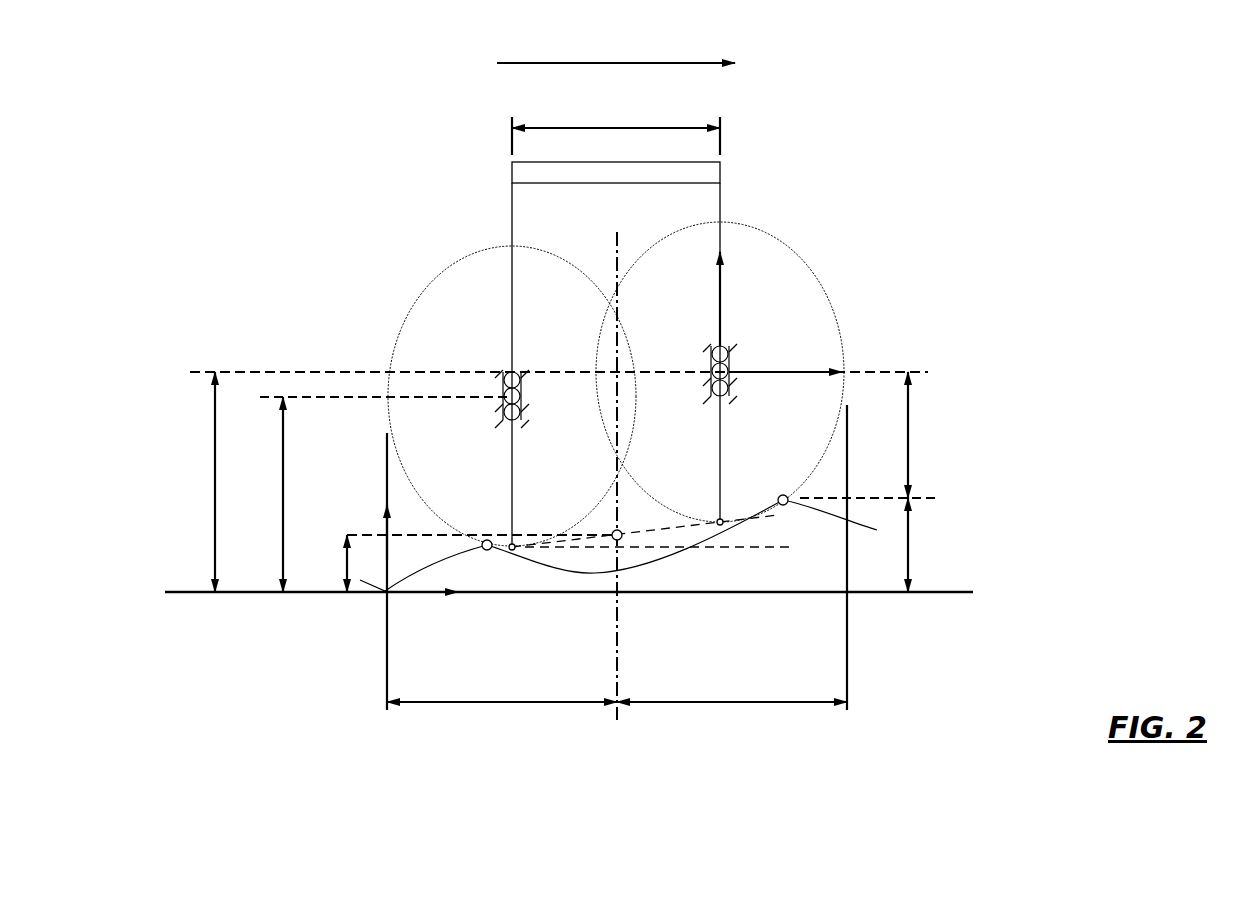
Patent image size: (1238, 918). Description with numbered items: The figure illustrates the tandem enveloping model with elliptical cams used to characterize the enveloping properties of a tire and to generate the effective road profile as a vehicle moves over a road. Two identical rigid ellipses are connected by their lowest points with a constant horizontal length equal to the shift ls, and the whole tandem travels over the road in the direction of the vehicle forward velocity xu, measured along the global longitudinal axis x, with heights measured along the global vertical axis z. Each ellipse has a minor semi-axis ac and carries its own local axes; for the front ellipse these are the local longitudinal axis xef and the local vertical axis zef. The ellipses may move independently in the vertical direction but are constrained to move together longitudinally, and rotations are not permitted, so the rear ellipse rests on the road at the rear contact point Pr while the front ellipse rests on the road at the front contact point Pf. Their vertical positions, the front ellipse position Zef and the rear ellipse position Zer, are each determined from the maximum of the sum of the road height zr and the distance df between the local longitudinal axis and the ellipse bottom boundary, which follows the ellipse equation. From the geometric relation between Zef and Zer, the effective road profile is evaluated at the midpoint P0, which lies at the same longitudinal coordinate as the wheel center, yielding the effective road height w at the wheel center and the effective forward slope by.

The vehicle forward velocity xu is at (616, 46).
The shift ls is at (616, 122).
The front ellipse local vertical axis zef is at (689, 299).
The front ellipse local longitudinal axis xef is at (785, 351).
The vertical axis z is at (376, 531).
The longitudinal axis x is at (425, 606).
The vertical position of the front ellipse Zef is at (187, 482).
The vertical position of the rear ellipse Zer is at (255, 494).
The effective road height at the wheel center w is at (464, 563).
The effective forward slope by is at (665, 541).
The distance between the front local longitudinal ellipse axis and the ellipse botto df is at (961, 435).
The road height zr is at (1007, 545).
The minor ellipse semi-axis ac is at (704, 663).
The rear ellipse contact point Pr is at (487, 528).
The midpoint P0 is at (629, 520).
The front ellipse contact point Pf is at (781, 481).